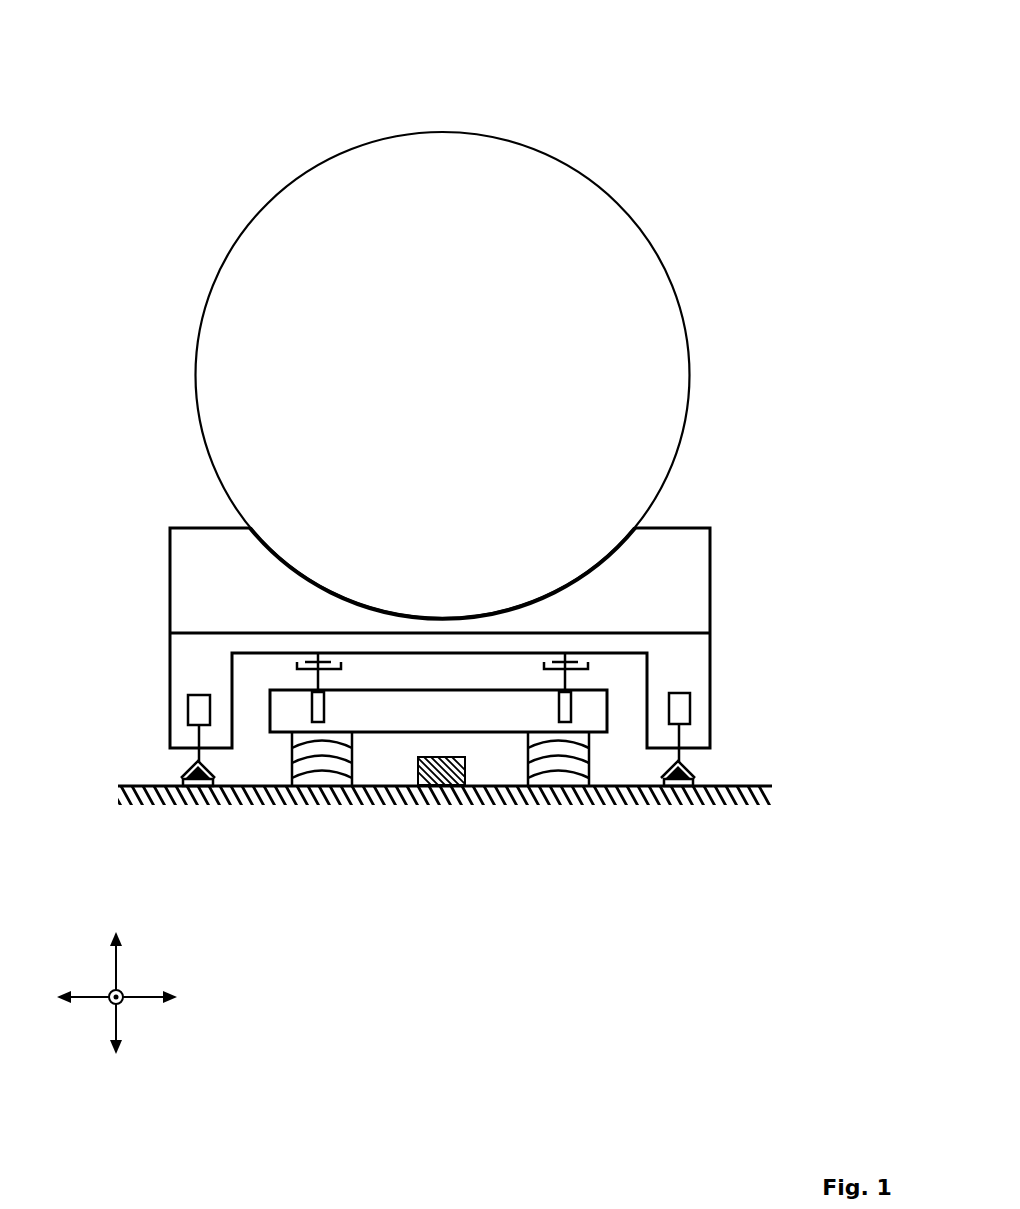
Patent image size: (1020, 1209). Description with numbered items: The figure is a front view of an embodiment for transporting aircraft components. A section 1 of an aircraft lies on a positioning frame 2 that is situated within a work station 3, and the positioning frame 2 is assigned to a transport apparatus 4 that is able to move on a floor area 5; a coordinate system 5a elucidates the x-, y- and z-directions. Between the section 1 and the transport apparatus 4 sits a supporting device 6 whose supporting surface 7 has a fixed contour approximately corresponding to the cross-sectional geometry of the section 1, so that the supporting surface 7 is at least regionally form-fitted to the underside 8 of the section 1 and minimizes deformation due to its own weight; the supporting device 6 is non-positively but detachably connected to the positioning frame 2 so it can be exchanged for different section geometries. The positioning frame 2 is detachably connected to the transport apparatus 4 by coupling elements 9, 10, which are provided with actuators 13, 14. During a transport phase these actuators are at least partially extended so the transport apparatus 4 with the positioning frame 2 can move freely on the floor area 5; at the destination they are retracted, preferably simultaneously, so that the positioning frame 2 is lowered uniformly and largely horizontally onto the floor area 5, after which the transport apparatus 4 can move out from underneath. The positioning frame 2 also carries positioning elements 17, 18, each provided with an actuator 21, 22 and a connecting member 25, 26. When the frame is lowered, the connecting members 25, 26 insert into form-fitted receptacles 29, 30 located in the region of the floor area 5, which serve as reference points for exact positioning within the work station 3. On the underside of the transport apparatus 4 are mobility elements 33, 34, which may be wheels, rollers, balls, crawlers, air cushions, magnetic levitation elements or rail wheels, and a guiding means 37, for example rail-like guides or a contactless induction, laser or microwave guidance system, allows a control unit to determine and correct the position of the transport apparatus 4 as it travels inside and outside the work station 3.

The section 1 is at (540, 148).
The positioning frame 2 is at (700, 660).
The work station 3 is at (181, 35).
The transport apparatus 4 is at (492, 718).
The floor area 5 is at (745, 785).
The coordinate system 5a is at (117, 1028).
The supporting device 6 is at (695, 537).
The supporting surface 7 is at (594, 548).
The underside 8 is at (228, 509).
The coupling element 9 is at (266, 678).
The coupling element 10 is at (612, 673).
The actuator 13 is at (318, 710).
The actuator 14 is at (557, 707).
The positioning element 17 is at (152, 746).
The positioning element 18 is at (749, 742).
The actuator 21 is at (195, 710).
The actuator 22 is at (690, 700).
The connecting member 25 is at (185, 765).
The connecting member 26 is at (695, 765).
The receptacle 29 is at (182, 783).
The receptacle 30 is at (697, 777).
The mobility element 33 is at (335, 763).
The mobility element 34 is at (573, 762).
The guiding means 37 is at (466, 772).